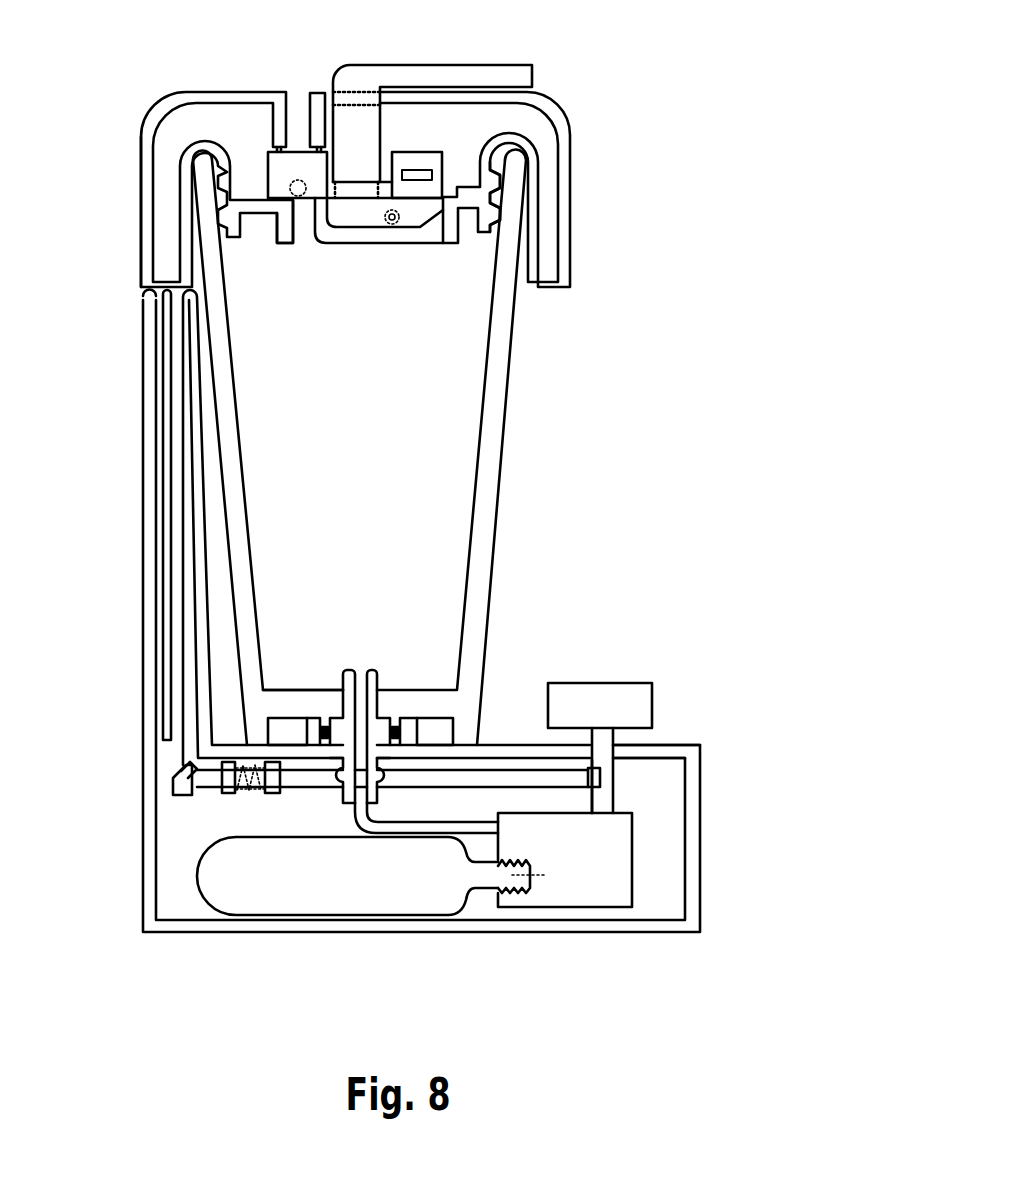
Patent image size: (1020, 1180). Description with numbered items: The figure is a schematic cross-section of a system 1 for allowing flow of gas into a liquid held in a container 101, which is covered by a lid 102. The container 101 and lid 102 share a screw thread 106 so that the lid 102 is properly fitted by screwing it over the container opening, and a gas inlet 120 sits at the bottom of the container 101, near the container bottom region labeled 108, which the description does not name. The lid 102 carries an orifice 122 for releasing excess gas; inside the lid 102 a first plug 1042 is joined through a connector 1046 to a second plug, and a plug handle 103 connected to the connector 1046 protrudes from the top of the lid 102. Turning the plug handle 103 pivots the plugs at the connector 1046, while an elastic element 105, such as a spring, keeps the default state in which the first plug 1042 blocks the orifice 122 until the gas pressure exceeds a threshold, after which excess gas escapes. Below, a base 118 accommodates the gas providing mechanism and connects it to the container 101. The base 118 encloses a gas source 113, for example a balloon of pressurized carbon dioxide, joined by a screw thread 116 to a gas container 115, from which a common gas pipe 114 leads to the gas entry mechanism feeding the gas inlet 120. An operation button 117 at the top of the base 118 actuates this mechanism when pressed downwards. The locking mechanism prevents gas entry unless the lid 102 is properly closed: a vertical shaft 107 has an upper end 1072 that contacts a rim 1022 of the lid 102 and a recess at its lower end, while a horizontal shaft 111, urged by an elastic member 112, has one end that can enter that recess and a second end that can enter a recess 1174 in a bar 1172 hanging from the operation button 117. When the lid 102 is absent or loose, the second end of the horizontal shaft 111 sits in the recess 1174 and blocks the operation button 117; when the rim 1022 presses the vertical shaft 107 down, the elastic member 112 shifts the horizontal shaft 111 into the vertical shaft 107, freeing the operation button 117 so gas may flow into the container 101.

The system 1 is at (138, 100).
The container 101 is at (503, 452).
The lid 102 is at (575, 135).
The rim 1022 is at (163, 212).
The plug handle 103 is at (497, 62).
The elastic element 105 is at (398, 212).
The screw thread 106 is at (497, 210).
The vertical shaft 107 is at (180, 452).
The upper end 1072 is at (162, 318).
The cup bottom 108 is at (333, 688).
The horizontal shaft 111 is at (206, 787).
The elastic member 112 is at (250, 790).
The gas source 113 is at (212, 905).
The common gas pipe 114 is at (355, 815).
The gas container 115 is at (633, 862).
The screw thread 116 is at (530, 893).
The operation button 117 is at (604, 683).
The bar 1172 is at (608, 775).
The recess 1174 is at (608, 775).
The base 118 is at (702, 825).
The gas inlet 120 is at (368, 665).
The orifice 122 is at (302, 240).
The first plug 1042 is at (302, 100).
The connector 1046 is at (358, 190).